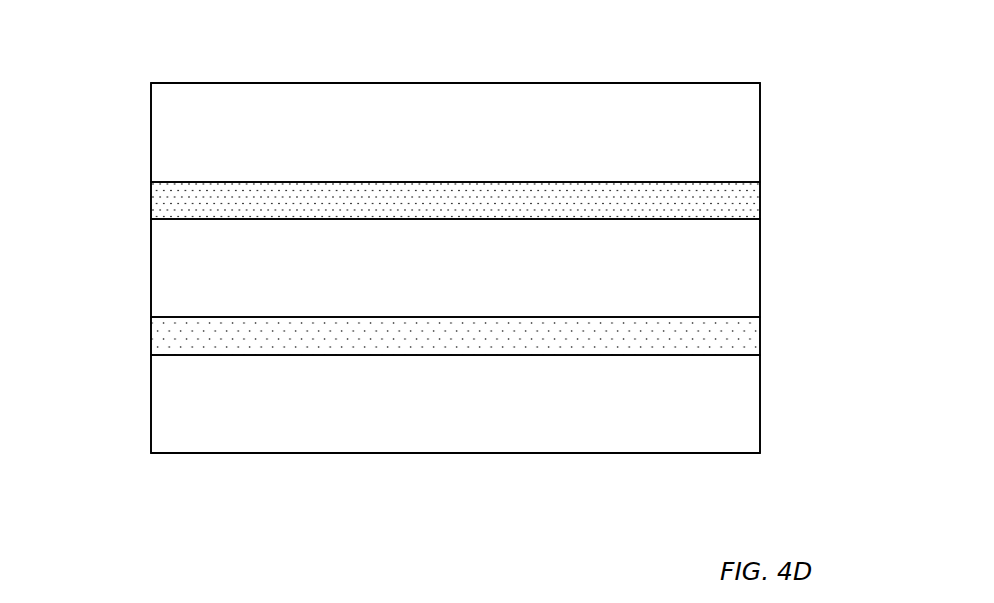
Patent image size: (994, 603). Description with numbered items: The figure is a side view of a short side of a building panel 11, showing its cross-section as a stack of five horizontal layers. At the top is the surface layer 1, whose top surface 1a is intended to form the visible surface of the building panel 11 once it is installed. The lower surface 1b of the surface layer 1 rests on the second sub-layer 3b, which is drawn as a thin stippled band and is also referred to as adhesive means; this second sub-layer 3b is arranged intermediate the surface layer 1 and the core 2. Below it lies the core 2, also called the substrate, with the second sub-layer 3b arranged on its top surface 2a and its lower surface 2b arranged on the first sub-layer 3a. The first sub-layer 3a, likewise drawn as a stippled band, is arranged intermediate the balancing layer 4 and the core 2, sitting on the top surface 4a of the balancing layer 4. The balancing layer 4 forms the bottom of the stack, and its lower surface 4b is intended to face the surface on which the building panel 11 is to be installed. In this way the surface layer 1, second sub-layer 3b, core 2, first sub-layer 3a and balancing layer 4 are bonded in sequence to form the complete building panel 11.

The building panel 11 is at (528, 64).
The surface layer 1 is at (740, 103).
The top surface of the surface layer 1a is at (193, 83).
The lower surface of the surface layer 1b is at (152, 180).
The core 2 is at (748, 273).
The top surface of the core 2a is at (152, 217).
The lower surface of the core 2b is at (183, 313).
The first sub-layer 3a is at (742, 337).
The second sub-layer 3b is at (738, 190).
The balancing layer 4 is at (747, 442).
The top surface of the balancing layer 4a is at (185, 354).
The lower surface of the balancing layer 4b is at (203, 453).